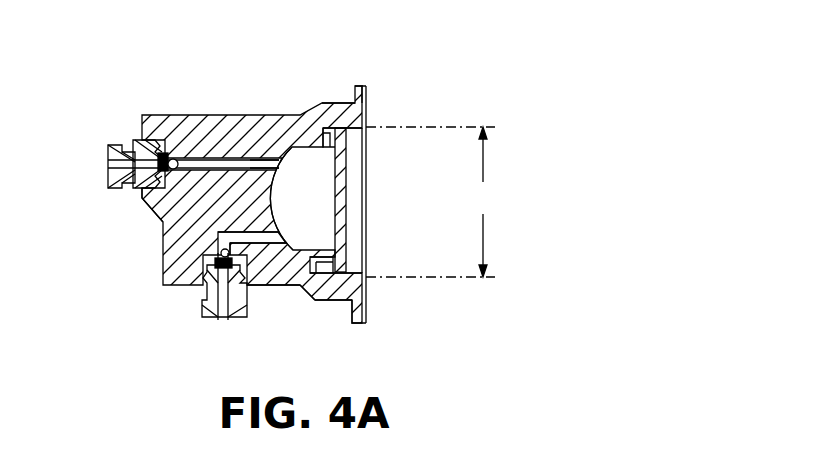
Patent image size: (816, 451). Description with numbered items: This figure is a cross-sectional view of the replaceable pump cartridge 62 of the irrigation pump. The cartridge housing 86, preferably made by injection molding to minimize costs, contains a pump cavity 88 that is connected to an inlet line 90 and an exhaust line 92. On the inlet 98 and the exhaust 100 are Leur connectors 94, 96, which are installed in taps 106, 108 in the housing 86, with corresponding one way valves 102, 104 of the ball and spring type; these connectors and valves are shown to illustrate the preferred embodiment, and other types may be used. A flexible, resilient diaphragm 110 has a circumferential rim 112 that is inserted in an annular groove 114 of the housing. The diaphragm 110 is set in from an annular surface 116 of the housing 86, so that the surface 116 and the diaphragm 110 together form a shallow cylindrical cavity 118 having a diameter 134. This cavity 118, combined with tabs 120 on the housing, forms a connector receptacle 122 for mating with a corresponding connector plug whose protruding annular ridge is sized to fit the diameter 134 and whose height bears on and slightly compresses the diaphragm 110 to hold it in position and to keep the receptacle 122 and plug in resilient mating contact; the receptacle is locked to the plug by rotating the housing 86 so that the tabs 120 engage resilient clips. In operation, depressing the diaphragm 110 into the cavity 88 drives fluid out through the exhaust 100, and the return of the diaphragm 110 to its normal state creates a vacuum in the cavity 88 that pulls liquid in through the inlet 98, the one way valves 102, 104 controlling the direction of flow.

The cartridge 62 is at (241, 86).
The cartridge housing 86 is at (182, 117).
The pump cavity 88 is at (316, 209).
The inlet line 90 is at (272, 165).
The exhaust line 92 is at (275, 243).
The Leur connector 94 is at (112, 144).
The Leur connector 96 is at (203, 307).
The inlet 98 is at (99, 165).
The exhaust 100 is at (223, 327).
The one way valve 102 is at (147, 117).
The one way valve 104 is at (203, 258).
The tap 106 is at (150, 205).
The tap 108 is at (251, 287).
The diaphragm 110 is at (348, 197).
The circumferential rim 112 is at (329, 124).
The annular groove 114 is at (300, 287).
The surface 116 is at (367, 98).
The shallow cylindrical cavity 118 is at (358, 160).
The tabs 120 is at (367, 86).
The connector receptacle 122 is at (372, 222).
The diameter 134 is at (439, 202).